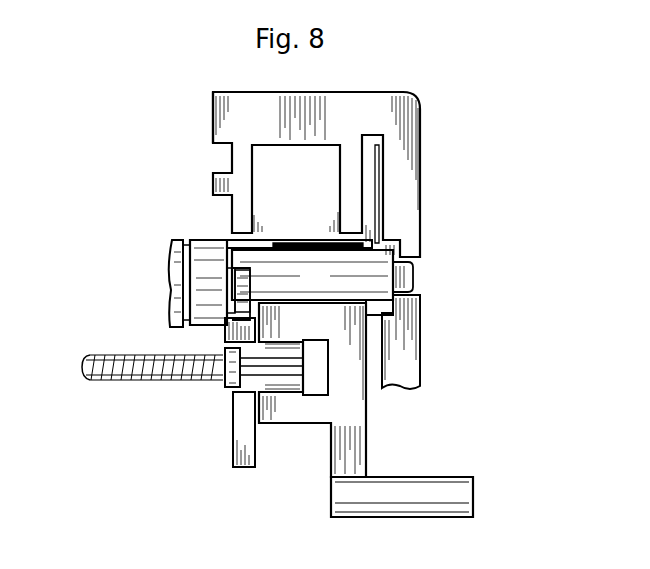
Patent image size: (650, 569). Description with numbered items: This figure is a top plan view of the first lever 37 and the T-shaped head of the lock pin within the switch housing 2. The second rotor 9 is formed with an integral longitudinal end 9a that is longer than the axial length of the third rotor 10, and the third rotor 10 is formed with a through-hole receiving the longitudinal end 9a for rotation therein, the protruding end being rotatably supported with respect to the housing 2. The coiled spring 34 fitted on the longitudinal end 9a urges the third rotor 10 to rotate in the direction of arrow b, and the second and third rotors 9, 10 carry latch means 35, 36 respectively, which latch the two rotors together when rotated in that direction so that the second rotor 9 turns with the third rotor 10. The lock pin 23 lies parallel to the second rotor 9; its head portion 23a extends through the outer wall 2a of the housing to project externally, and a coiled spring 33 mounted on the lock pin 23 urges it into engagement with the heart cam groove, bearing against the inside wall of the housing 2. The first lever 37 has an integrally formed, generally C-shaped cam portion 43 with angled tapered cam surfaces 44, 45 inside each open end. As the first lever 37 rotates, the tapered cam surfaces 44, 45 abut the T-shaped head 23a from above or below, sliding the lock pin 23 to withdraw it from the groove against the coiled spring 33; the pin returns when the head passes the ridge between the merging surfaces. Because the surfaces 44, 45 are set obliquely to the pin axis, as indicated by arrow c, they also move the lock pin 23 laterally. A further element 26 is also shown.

The housing 2 is at (378, 92).
The outer wall 2a is at (240, 435).
The second rotor 9 is at (172, 240).
The longitudinal end 9a is at (413, 277).
The third rotor 10 is at (290, 243).
The lock pin 23 is at (245, 393).
The head portion 23a is at (300, 370).
The housing wall 26 is at (412, 360).
The coiled spring 33 is at (137, 382).
The coiled spring 34 is at (377, 185).
The latch means 35 is at (233, 268).
The latch means 36 is at (240, 277).
The first lever 37 is at (350, 453).
The cam portion 43 is at (308, 404).
The tapered cam surface 44 is at (276, 333).
The tapered cam surface 45 is at (282, 342).